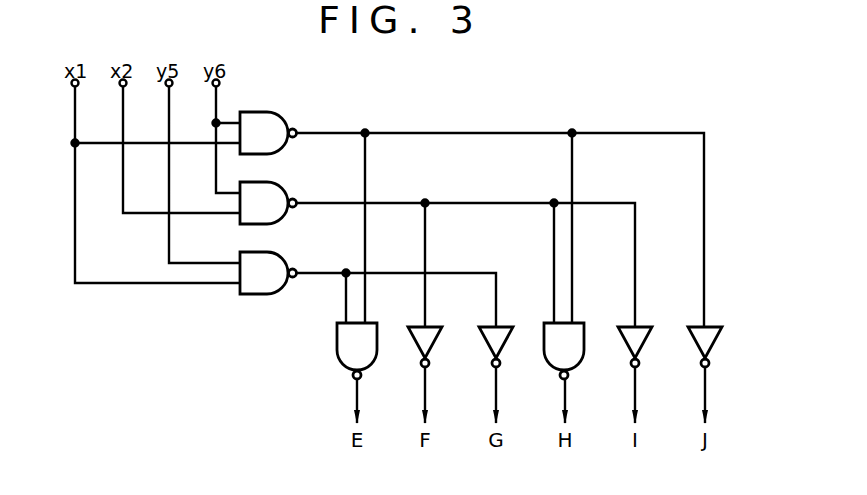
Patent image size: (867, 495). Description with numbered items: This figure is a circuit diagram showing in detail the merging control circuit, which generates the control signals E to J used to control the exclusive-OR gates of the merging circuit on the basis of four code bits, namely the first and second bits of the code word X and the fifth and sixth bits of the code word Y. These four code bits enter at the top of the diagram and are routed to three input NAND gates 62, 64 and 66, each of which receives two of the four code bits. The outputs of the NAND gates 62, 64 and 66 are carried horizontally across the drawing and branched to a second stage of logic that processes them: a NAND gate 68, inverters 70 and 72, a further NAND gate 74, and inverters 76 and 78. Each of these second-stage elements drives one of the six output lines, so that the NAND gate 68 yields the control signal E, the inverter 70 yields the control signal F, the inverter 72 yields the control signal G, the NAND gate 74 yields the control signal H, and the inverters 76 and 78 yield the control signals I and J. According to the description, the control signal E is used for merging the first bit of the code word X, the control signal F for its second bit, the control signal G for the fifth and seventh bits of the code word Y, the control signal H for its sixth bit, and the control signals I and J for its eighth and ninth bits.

The NAND gate 62 is at (284, 269).
The NAND gate 64 is at (284, 200).
The NAND gate 66 is at (283, 119).
The NAND gate 68 is at (375, 326).
The inverter 70 is at (440, 329).
The inverter 72 is at (508, 329).
The NAND gate 74 is at (582, 326).
The inverter 76 is at (648, 329).
The inverter 78 is at (717, 329).